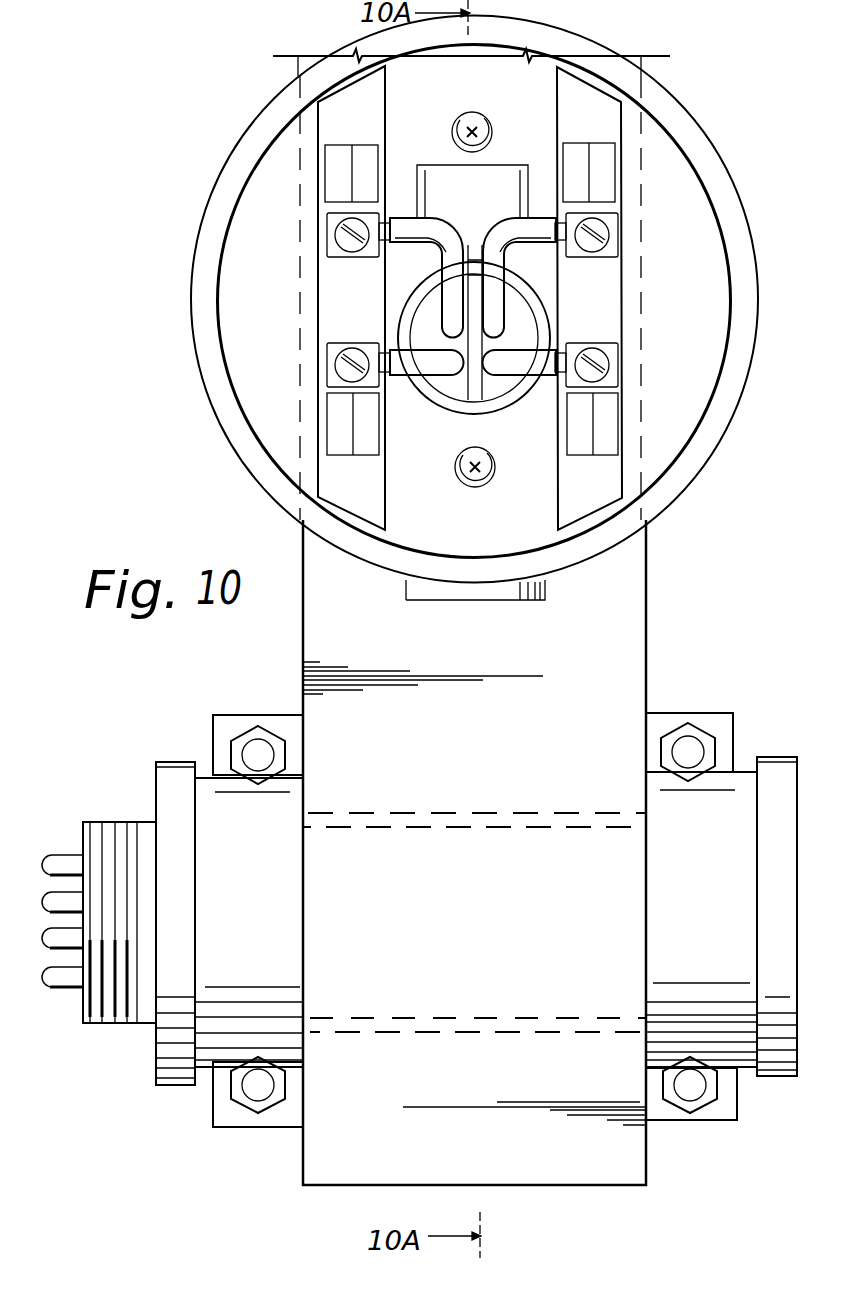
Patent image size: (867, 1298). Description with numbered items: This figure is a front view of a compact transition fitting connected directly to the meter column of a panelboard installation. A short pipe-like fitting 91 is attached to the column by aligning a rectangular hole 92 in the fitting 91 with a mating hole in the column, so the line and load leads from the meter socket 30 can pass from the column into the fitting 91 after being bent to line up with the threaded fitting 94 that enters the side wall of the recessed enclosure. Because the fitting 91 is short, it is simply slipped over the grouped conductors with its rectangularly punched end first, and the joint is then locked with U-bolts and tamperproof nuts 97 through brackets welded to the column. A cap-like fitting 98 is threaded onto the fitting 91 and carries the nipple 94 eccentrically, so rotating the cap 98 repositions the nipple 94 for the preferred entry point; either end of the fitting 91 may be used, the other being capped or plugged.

The meter socket 30 is at (723, 150).
The pipe-like fitting 91 is at (252, 918).
The rectangular hole 92 is at (388, 917).
The threaded fitting 94 is at (96, 822).
The tamperproof nut 97 is at (252, 1108).
The cap-like fitting 98 is at (233, 721).